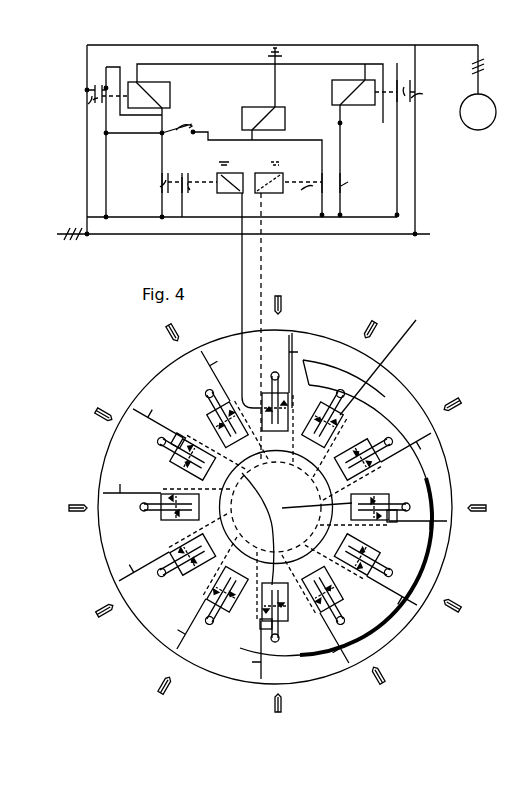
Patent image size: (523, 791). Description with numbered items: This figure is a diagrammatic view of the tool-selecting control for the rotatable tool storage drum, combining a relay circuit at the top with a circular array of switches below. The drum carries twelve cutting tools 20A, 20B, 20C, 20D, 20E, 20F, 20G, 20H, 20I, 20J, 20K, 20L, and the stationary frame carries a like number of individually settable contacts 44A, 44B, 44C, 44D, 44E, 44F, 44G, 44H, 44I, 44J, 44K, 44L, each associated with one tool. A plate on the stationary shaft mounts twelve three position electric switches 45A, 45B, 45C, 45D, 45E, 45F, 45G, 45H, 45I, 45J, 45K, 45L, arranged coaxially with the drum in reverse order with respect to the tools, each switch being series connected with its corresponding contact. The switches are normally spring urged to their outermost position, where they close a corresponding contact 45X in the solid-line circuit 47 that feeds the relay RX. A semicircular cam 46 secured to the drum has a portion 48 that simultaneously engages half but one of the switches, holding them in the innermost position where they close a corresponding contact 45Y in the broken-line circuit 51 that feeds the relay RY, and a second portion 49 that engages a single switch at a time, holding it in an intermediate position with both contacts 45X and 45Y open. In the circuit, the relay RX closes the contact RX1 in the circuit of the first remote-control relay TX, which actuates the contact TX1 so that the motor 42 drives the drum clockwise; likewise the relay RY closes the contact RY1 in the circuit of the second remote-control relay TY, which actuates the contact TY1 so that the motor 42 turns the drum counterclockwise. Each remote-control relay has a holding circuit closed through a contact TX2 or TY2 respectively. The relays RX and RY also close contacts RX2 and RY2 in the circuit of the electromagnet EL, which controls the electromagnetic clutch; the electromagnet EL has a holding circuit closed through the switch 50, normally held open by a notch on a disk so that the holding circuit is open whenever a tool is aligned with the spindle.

The motor 42 is at (490, 124).
The semicircular cam 46 is at (337, 567).
The circuit 47 is at (276, 507).
The portion of the cam 48 is at (430, 480).
The second portion of the cam 49 is at (286, 684).
The switch 50 is at (164, 134).
The circuit 51 is at (276, 507).
The contact 45X is at (178, 472).
The contact 45Y is at (297, 529).
The three position electric switch 45A is at (264, 616).
The three position electric switch 45B is at (341, 587).
The three position electric switch 45C is at (356, 554).
The three position electric switch 45D is at (385, 485).
The three position electric switch 45E is at (353, 459).
The three position electric switch 45F is at (330, 412).
The three position electric switch 45G is at (279, 407).
The three position electric switch 45H is at (214, 425).
The three position electric switch 45I is at (162, 449).
The three position electric switch 45J is at (172, 522).
The three position electric switch 45K is at (195, 557).
The three position electric switch 45L is at (228, 584).
The individually settable contact 44A is at (245, 662).
The individually settable contact 44B is at (342, 670).
The individually settable contact 44C is at (400, 608).
The individually settable contact 44D is at (447, 527).
The individually settable contact 44E is at (421, 449).
The individually settable contact 44F is at (380, 378).
The individually settable contact 44G is at (298, 352).
The individually settable contact 44H is at (217, 361).
The individually settable contact 44I is at (158, 403).
The individually settable contact 44J is at (120, 484).
The individually settable contact 44K is at (134, 572).
The individually settable contact 44L is at (186, 644).
The cutting tool 20A is at (258, 707).
The cutting tool 20B is at (152, 681).
The cutting tool 20C is at (113, 618).
The cutting tool 20D is at (84, 517).
The cutting tool 20E is at (96, 422).
The cutting tool 20F is at (157, 338).
The cutting tool 20G is at (283, 305).
The cutting tool 20H is at (371, 321).
The cutting tool 20I is at (444, 396).
The cutting tool 20J is at (475, 520).
The cutting tool 20K is at (461, 593).
The cutting tool 20L is at (393, 674).
The first remote-control relay TX is at (170, 95).
The contact TX1 is at (90, 106).
The contact TX2 is at (104, 73).
The second remote-control relay TY is at (365, 80).
The contact TY1 is at (433, 94).
The contact TY2 is at (393, 72).
The relay RX is at (232, 173).
The contact RX1 is at (153, 183).
The contact RX2 is at (199, 192).
The relay RY is at (262, 173).
The contact RY1 is at (352, 182).
The contact RY2 is at (303, 198).
The electromagnet EL is at (285, 118).